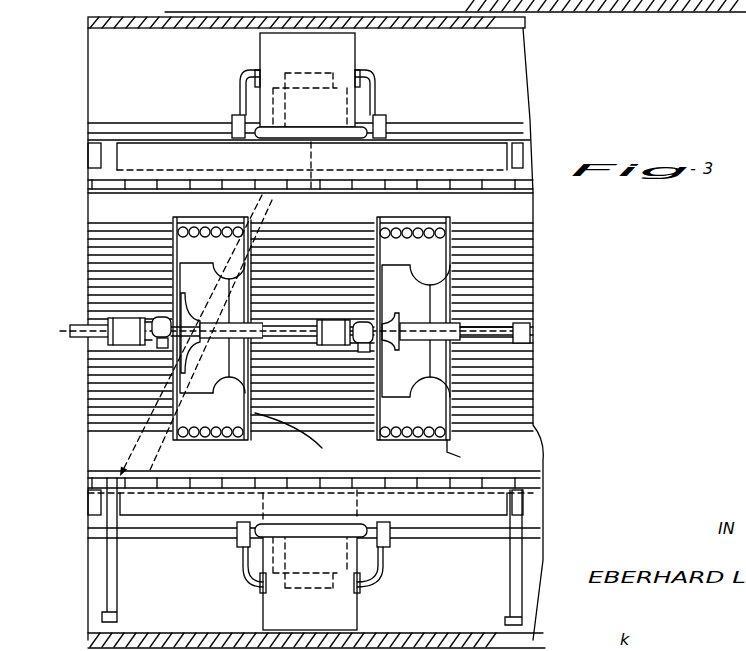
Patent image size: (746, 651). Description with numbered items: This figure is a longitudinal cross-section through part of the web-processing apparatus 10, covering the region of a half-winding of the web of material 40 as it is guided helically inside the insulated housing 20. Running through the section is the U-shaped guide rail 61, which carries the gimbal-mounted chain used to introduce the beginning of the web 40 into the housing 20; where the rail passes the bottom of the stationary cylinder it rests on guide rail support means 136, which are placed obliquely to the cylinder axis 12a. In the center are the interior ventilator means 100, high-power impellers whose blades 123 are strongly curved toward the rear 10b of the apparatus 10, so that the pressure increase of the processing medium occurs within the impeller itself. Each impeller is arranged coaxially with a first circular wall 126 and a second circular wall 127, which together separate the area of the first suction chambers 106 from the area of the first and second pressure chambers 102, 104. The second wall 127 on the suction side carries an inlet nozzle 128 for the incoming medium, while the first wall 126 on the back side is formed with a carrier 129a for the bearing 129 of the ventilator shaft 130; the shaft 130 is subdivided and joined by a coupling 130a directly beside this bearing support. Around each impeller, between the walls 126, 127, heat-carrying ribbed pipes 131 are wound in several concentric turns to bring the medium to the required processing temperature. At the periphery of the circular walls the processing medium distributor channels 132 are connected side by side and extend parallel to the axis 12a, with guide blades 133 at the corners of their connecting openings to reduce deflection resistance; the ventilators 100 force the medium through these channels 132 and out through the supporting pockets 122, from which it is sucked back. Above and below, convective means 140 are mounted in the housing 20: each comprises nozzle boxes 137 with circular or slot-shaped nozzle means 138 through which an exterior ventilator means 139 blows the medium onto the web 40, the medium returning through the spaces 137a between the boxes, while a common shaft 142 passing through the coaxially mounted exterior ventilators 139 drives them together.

The apparatus 10 is at (84, 254).
The rear of the apparatus 10b is at (535, 400).
The axis of the stationary cylinder 12a is at (529, 333).
The housing 20 is at (171, 28).
The web of material 40 is at (505, 478).
The U-shaped guide rail 61 is at (68, 458).
The interior ventilator means 100 is at (413, 313).
The first pressure chamber 102 is at (418, 252).
The second pressure chamber 104 is at (513, 207).
The first suction chamber 106 is at (323, 393).
The supporting pocket 122 is at (213, 179).
The impeller blades 123 is at (197, 269).
The first circular wall 126 is at (173, 373).
The second circular wall 127 is at (312, 445).
The inlet nozzle 128 is at (230, 394).
The bearing 129 is at (157, 320).
The carrier 129a is at (157, 346).
The ventilator shaft 130 is at (103, 324).
The coupling 130a is at (127, 325).
The ribbed pipes 131 is at (187, 224).
The distributor channels 132 is at (394, 465).
The guide blade 133 is at (374, 443).
The guide rail support means 136 is at (118, 577).
The nozzle boxes 137 is at (442, 155).
The spaces between the nozzle boxes 137a is at (520, 160).
The nozzle means 138 is at (467, 170).
The exterior ventilator means 139 is at (315, 68).
The convective means 140 is at (358, 50).
The common shaft 142 is at (170, 128).